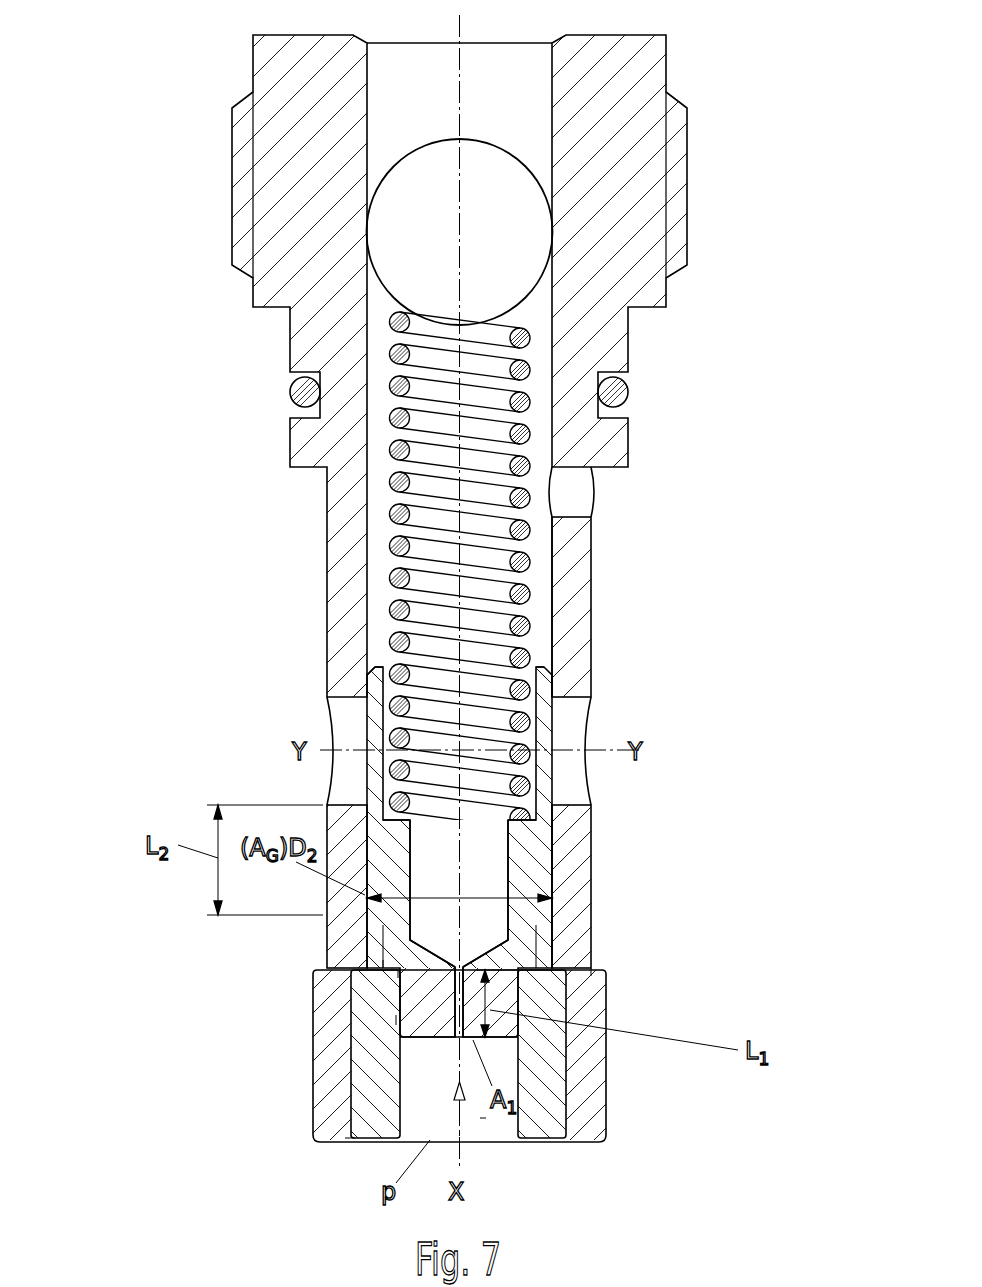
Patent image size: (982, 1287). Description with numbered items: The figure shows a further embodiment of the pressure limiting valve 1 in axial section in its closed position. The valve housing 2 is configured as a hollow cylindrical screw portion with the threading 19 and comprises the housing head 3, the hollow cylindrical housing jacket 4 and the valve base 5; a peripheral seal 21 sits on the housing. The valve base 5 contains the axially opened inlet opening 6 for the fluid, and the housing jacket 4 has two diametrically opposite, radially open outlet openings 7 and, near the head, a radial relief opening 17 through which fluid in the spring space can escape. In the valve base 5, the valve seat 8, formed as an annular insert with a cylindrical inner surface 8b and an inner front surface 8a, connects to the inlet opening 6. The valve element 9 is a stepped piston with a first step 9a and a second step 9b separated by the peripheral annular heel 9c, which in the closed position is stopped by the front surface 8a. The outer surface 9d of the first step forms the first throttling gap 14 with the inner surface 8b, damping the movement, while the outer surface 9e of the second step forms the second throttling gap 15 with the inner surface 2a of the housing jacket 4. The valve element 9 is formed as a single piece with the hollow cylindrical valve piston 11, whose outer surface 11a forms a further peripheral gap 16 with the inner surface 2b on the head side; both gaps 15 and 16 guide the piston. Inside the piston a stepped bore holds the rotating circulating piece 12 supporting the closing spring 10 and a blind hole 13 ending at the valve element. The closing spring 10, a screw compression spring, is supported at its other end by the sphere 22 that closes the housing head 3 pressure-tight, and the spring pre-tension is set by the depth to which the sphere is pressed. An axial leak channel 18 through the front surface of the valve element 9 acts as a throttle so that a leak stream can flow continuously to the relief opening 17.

The pressure limiting valve 1 is at (665, 341).
The valve housing 2 is at (627, 988).
The inner surface of the housing jacket 2a is at (548, 812).
The inner surface of the housing jacket 2b is at (536, 600).
The housing head 3 is at (649, 161).
The housing jacket 4 is at (575, 558).
The valve base 5 is at (585, 1097).
The inlet opening 6 is at (483, 1118).
The outlet opening 7 is at (570, 723).
The valve seat 8 is at (558, 1060).
The inner front surface of the valve seat 8a is at (540, 940).
The inner surface of the valve seat 8b is at (459, 1058).
The valve element 9 is at (392, 925).
The first step 9a is at (398, 978).
The second step 9b is at (383, 963).
The annular heel 9c is at (592, 976).
The outer surface of the first step 9d is at (405, 990).
The outer surface of the second step 9e is at (545, 897).
The closing spring 10 is at (387, 542).
The valve piston 11 is at (553, 688).
The outer surface of the valve piston 11a is at (366, 678).
The rotating circulating piece 12 is at (380, 803).
The blind hole 13 is at (494, 931).
The throttling gap 14 is at (395, 1020).
The second throttling gap 15 is at (540, 870).
The peripheral gap 16 is at (370, 692).
The relief opening 17 is at (580, 497).
The leak channel 18 is at (345, 1138).
The threading 19 is at (678, 214).
The peripheral seal 21 is at (635, 392).
The sphere 22 is at (413, 210).